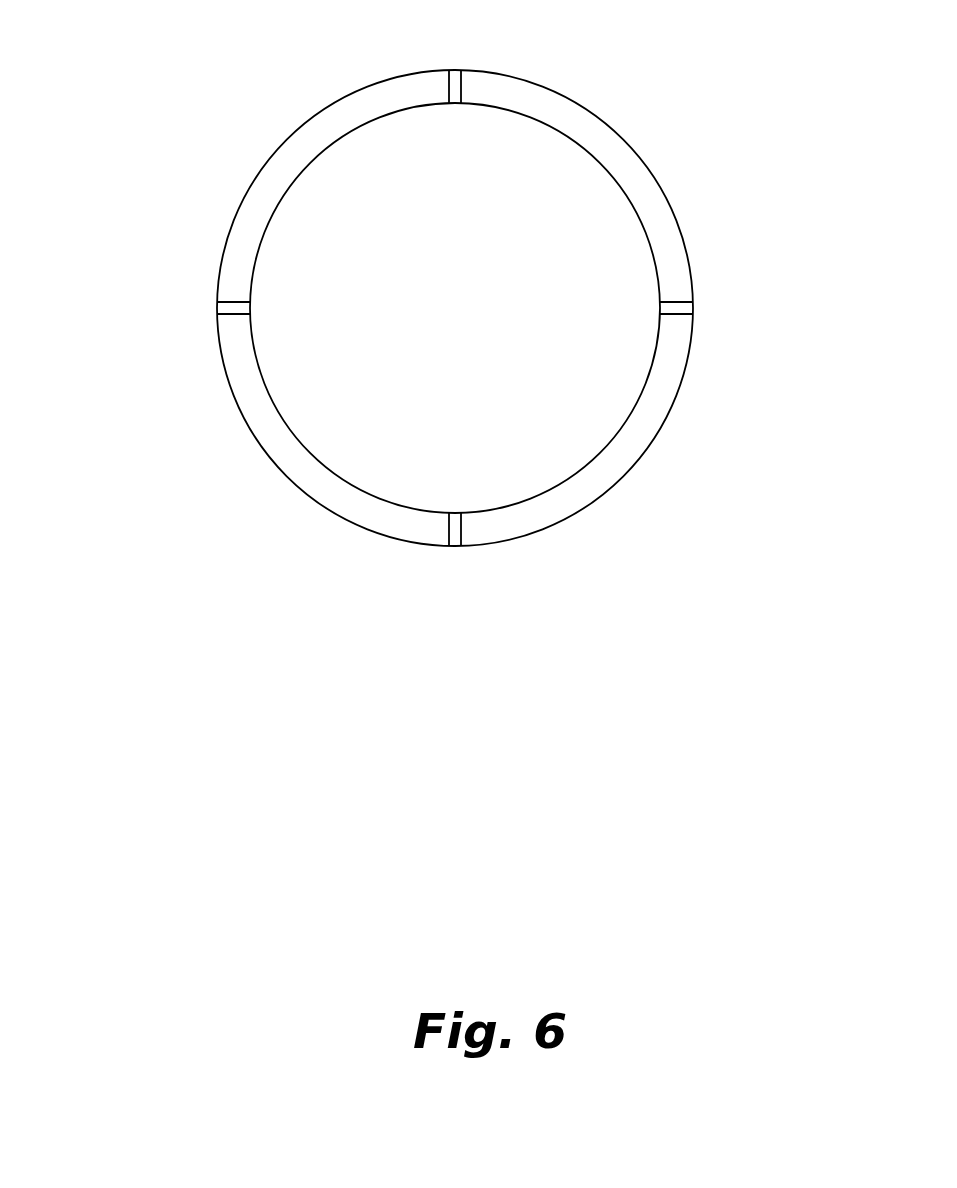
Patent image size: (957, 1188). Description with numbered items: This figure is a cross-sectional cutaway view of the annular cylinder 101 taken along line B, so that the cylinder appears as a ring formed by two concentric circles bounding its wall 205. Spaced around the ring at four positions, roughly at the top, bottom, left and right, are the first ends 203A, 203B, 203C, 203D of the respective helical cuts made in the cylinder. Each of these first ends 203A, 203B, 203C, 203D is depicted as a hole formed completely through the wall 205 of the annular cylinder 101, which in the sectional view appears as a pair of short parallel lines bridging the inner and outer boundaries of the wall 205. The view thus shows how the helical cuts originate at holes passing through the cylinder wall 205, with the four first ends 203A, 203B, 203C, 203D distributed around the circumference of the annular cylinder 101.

The annular cylinder 101 is at (240, 408).
The wall 205 is at (291, 448).
The first end 203A is at (453, 532).
The first end 203B is at (683, 312).
The first end 203C is at (452, 85).
The first end 203D is at (233, 309).